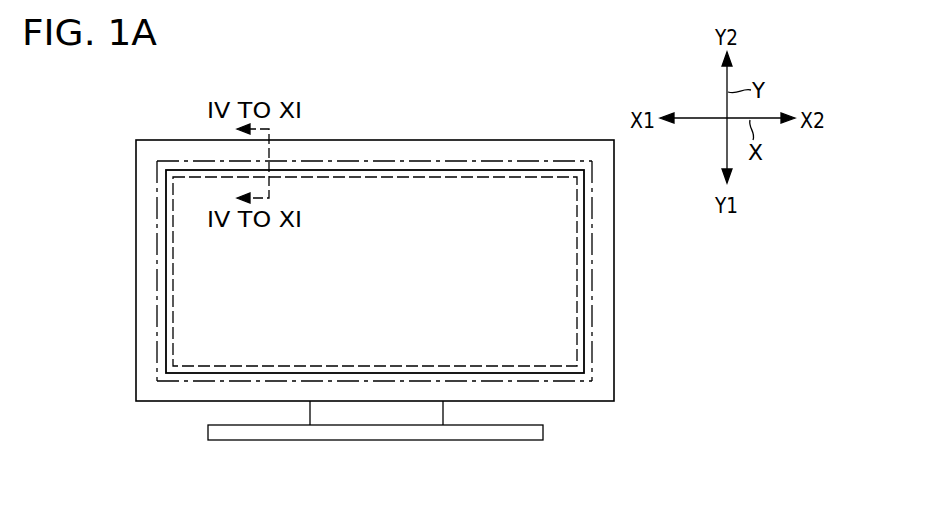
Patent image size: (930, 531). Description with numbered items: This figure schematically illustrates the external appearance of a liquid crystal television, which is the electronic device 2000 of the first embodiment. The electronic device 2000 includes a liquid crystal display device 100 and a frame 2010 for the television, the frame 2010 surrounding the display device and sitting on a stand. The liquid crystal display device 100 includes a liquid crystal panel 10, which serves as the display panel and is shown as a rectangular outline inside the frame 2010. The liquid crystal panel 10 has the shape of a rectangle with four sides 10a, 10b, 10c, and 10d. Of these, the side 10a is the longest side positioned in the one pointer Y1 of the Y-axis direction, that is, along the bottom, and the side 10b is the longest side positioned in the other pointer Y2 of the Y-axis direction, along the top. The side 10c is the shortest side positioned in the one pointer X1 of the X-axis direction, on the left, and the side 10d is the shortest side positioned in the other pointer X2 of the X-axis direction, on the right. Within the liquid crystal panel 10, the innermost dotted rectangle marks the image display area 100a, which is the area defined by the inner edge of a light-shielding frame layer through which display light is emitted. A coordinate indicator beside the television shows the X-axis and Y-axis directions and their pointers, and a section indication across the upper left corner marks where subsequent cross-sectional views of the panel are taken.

The electronic device 2000 is at (232, 68).
The liquid crystal panel 10 is at (602, 244).
The side 10a is at (385, 381).
The side 10b is at (405, 160).
The side 10c is at (157, 267).
The side 10d is at (592, 288).
The frame 2010 is at (602, 343).
The liquid crystal display device 100 is at (482, 152).
The image display area 100a is at (552, 188).